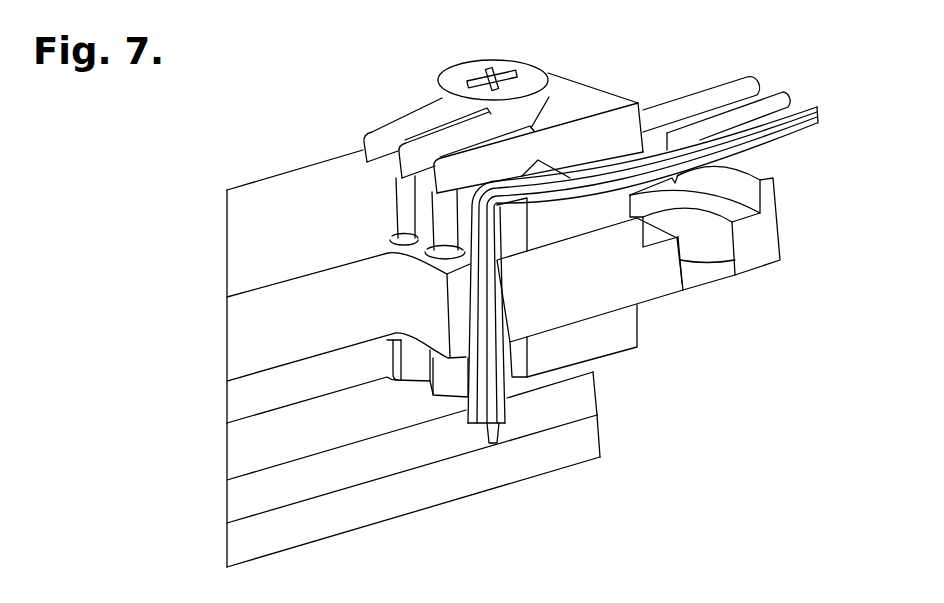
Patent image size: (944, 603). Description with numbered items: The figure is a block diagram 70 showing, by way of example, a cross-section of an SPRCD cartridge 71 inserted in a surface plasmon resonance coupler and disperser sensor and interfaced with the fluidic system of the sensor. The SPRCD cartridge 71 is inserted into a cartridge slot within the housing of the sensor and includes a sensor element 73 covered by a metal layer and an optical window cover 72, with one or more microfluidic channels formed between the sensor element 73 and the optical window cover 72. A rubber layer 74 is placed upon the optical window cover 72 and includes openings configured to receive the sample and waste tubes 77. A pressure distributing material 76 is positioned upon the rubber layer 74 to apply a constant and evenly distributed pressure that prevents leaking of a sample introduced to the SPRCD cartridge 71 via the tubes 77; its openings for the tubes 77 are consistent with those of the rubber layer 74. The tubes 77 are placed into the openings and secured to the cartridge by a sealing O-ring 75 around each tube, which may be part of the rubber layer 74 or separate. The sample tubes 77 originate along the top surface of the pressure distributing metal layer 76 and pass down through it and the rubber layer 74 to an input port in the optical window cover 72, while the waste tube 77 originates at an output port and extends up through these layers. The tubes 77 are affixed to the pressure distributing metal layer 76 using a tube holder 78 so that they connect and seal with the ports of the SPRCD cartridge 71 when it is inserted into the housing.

The block diagram 70 is at (159, 118).
The SPRCD cartridge 71 is at (220, 483).
The optical window cover 72 is at (597, 392).
The sensor element 73 is at (598, 433).
The rubber layer 74 is at (226, 404).
The sealing O-ring 75 is at (447, 398).
The pressure distributing material 76 is at (226, 246).
The sample and waste tubes 77 is at (819, 120).
The tube holder 78 is at (596, 82).